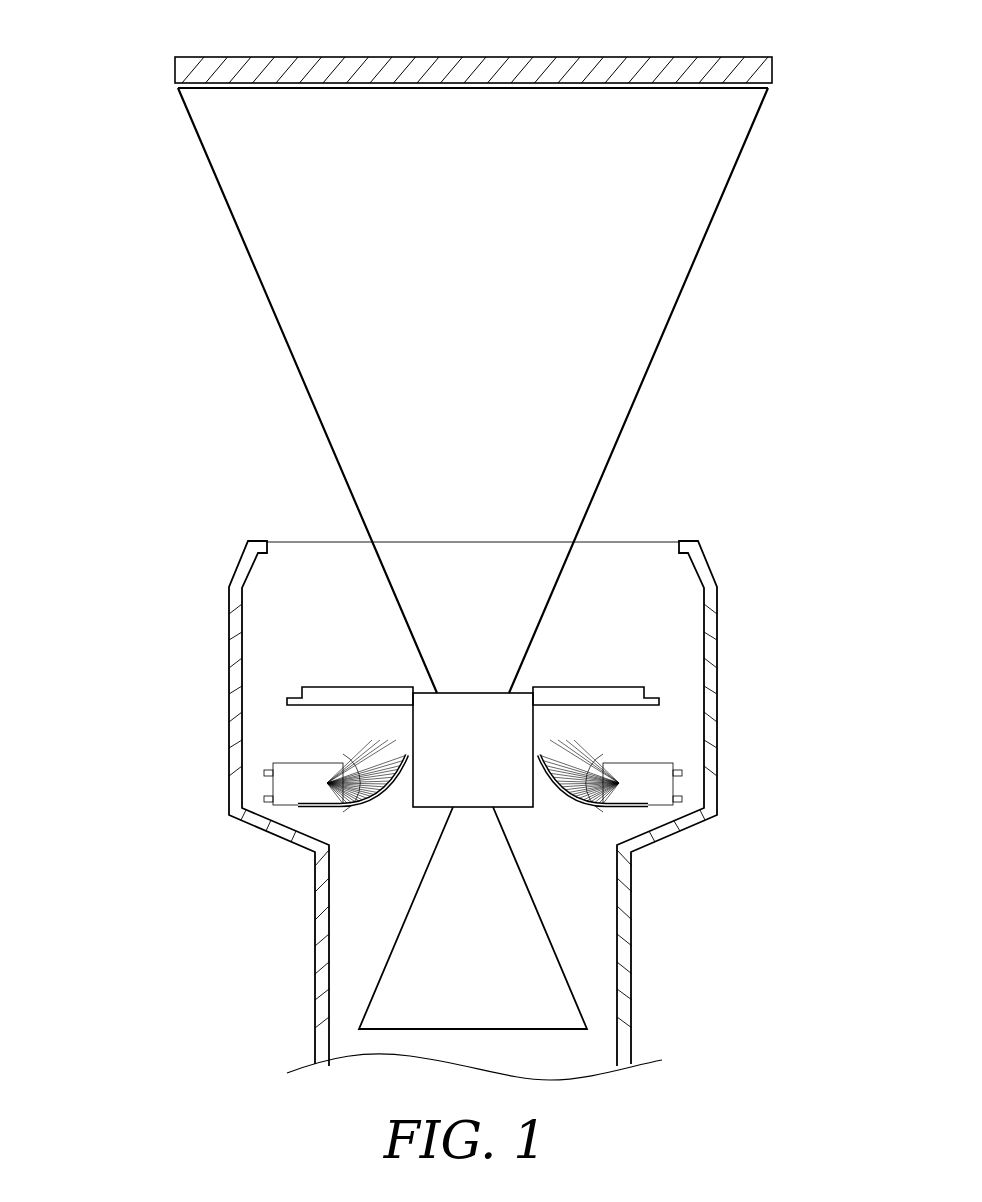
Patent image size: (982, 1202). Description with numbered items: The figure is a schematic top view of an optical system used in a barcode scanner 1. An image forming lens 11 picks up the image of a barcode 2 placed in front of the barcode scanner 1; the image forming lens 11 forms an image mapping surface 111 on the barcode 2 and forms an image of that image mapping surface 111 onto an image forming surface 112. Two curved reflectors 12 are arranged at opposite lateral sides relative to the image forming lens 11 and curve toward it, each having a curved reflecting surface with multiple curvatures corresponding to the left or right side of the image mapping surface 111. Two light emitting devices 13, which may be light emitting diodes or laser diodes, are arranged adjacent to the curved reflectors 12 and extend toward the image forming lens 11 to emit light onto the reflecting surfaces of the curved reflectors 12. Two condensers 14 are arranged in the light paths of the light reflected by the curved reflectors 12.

The barcode scanner 1 is at (712, 698).
The barcode 2 is at (470, 70).
The image forming lens 11 is at (527, 794).
The curved reflector 12 is at (341, 808).
The light emitting device 13 is at (309, 768).
The condenser 14 is at (322, 686).
The image mapping surface 111 is at (634, 91).
The image forming surface 112 is at (522, 1029).